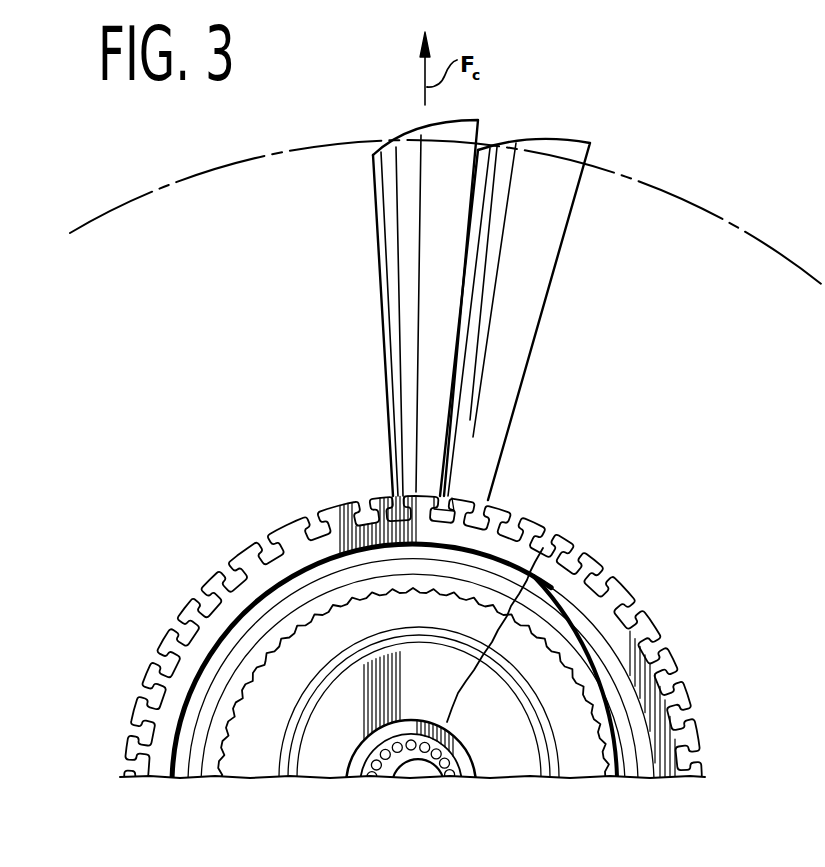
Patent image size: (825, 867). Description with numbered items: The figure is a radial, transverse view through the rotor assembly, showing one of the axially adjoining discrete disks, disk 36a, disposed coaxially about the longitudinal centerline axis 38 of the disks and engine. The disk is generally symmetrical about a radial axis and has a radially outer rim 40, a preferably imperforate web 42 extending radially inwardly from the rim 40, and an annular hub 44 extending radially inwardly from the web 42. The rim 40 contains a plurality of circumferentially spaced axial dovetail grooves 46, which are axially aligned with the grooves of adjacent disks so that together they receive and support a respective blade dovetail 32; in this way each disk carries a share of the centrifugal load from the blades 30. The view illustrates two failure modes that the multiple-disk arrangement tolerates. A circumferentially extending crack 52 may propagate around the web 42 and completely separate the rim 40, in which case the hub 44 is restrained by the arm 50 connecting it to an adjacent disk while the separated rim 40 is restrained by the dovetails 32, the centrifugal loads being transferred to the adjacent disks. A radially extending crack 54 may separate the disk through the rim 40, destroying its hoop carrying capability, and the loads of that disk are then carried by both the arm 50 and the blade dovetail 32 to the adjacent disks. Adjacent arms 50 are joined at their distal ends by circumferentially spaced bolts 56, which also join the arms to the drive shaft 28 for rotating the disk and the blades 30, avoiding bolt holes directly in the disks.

The drive shaft 28 is at (407, 762).
The blades 30 is at (560, 302).
The blade dovetail 32 is at (462, 496).
The disk 36a is at (207, 790).
The longitudinal centerline axis 38 is at (418, 790).
The radially outer rim 40 is at (318, 546).
The web 42 is at (266, 645).
The annular hub 44 is at (318, 722).
The axial dovetail grooves 46 is at (596, 557).
The arm 50 is at (363, 765).
The circumferentially extending crack 52 is at (603, 733).
The radially extending crack 54 is at (610, 607).
The bolts 56 is at (460, 777).